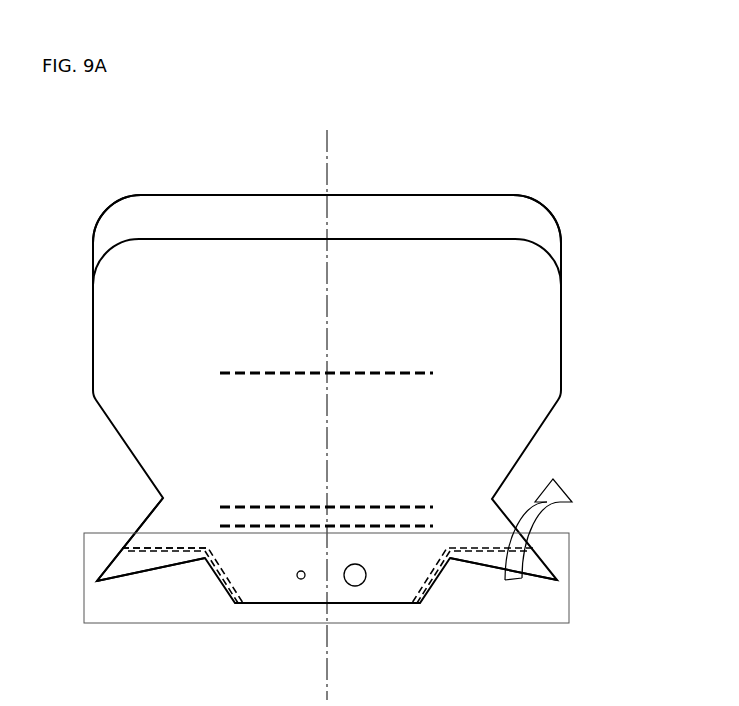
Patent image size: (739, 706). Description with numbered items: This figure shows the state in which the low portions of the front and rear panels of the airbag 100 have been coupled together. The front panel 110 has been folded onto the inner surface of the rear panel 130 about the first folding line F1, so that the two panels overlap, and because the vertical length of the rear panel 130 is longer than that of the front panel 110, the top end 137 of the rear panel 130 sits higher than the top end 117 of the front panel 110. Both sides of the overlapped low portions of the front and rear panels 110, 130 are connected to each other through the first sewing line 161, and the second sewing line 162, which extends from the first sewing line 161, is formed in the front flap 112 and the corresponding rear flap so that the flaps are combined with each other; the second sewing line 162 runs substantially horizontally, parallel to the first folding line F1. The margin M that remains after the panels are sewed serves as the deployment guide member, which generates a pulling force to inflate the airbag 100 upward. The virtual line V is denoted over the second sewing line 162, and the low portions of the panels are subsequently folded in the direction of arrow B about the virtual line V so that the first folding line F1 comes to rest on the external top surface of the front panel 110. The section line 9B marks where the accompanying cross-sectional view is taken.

The airbag 100 is at (80, 160).
The front panel 110 is at (118, 307).
The front flap 112 is at (128, 565).
The top end of the front panel 117 is at (240, 239).
The rear panel 130 is at (153, 213).
The top end of the rear panel 137 is at (190, 195).
The first sewing line 161 is at (170, 550).
The second sewing line 162 is at (153, 547).
The virtual line V is at (100, 532).
The first folding line F1 is at (280, 603).
The margin M is at (543, 577).
The arrow B is at (548, 529).
The section line 9B is at (332, 142).